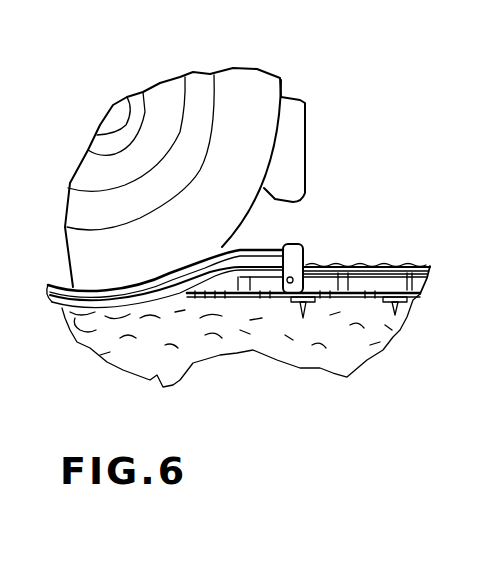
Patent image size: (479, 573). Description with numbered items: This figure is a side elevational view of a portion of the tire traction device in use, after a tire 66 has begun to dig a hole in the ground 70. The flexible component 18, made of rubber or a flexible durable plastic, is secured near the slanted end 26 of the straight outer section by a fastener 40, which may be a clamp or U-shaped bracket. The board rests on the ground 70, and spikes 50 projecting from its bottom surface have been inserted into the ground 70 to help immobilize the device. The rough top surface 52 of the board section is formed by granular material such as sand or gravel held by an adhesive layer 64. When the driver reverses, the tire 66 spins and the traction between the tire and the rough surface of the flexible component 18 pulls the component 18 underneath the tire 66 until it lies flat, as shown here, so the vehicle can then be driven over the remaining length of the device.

The tire 66 is at (258, 86).
The flexible component 18 is at (171, 286).
The straight outer section second end 26 is at (232, 287).
The adhesive layer 64 is at (355, 266).
The top surface 52 is at (415, 266).
The fastener 40 is at (293, 246).
The spikes 50 is at (398, 306).
The ground 70 is at (333, 350).